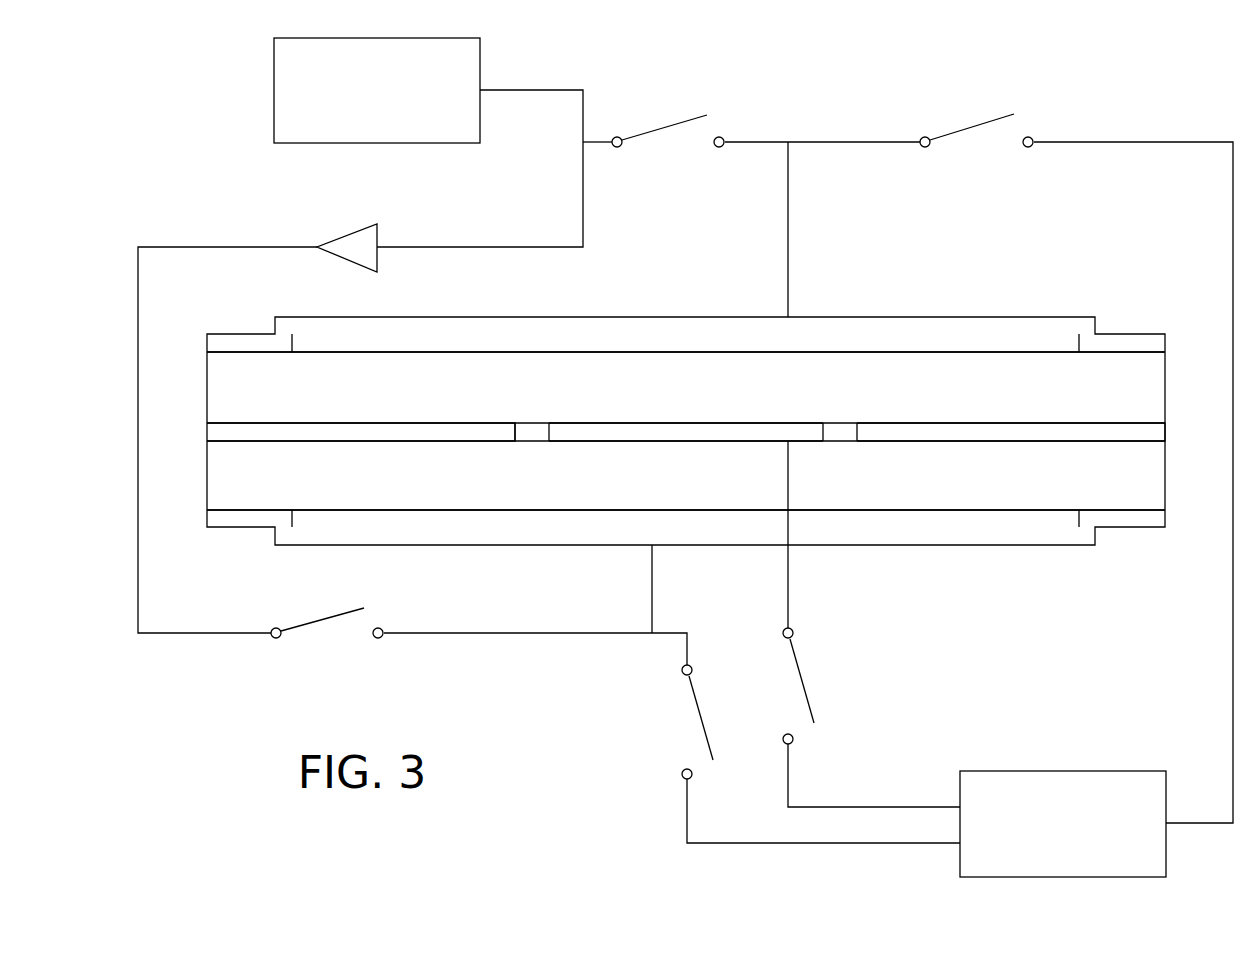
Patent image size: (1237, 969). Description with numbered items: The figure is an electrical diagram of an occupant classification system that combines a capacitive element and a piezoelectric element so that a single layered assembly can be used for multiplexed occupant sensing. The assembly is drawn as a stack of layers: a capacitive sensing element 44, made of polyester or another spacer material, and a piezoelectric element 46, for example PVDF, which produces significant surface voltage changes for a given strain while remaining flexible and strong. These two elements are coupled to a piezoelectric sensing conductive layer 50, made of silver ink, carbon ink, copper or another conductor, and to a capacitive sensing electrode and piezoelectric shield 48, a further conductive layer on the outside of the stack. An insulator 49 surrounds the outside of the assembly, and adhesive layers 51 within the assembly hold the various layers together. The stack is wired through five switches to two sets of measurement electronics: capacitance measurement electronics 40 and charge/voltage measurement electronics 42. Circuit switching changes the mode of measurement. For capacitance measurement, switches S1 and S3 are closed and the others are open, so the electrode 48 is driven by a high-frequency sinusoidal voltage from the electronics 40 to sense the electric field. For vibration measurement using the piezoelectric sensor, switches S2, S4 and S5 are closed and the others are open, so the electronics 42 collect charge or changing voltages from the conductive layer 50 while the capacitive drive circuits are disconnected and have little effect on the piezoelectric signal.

The capacitance measurement electronics 40 is at (273, 73).
The charge/voltage measurement electronics 42 is at (1100, 771).
The capacitive sensing element 44 is at (222, 372).
The piezoelectric element 46 is at (222, 462).
The capacitive sensing electrode and piezoelectric shield 48 is at (923, 343).
The insulator around the outside of the assembly 49 is at (1120, 342).
The piezoelectric sensing conductive layer 50 is at (643, 432).
The adhesive layers 51 is at (232, 432).
The switch S1 is at (668, 121).
The switch S2 is at (976, 121).
The switch S3 is at (327, 636).
The switch S4 is at (685, 722).
The switch S5 is at (787, 686).